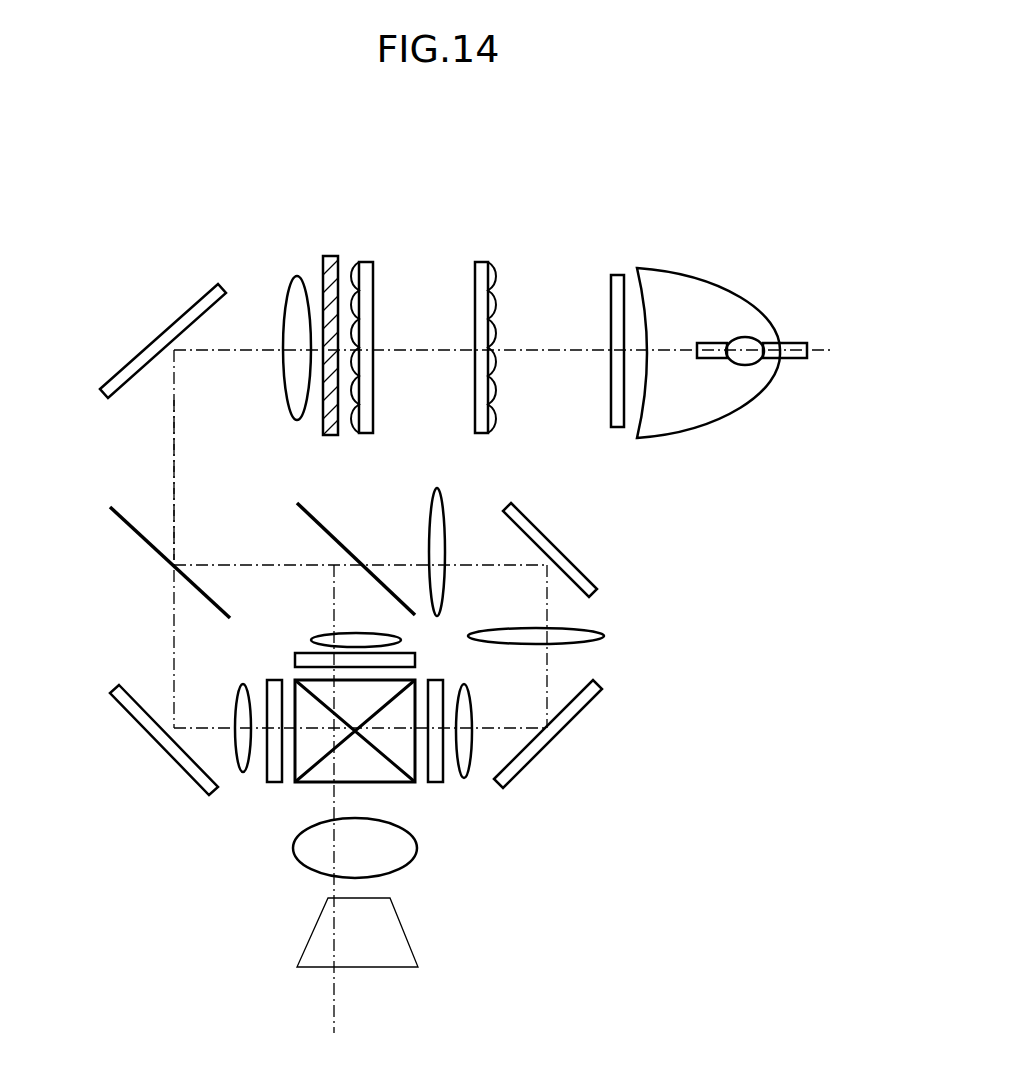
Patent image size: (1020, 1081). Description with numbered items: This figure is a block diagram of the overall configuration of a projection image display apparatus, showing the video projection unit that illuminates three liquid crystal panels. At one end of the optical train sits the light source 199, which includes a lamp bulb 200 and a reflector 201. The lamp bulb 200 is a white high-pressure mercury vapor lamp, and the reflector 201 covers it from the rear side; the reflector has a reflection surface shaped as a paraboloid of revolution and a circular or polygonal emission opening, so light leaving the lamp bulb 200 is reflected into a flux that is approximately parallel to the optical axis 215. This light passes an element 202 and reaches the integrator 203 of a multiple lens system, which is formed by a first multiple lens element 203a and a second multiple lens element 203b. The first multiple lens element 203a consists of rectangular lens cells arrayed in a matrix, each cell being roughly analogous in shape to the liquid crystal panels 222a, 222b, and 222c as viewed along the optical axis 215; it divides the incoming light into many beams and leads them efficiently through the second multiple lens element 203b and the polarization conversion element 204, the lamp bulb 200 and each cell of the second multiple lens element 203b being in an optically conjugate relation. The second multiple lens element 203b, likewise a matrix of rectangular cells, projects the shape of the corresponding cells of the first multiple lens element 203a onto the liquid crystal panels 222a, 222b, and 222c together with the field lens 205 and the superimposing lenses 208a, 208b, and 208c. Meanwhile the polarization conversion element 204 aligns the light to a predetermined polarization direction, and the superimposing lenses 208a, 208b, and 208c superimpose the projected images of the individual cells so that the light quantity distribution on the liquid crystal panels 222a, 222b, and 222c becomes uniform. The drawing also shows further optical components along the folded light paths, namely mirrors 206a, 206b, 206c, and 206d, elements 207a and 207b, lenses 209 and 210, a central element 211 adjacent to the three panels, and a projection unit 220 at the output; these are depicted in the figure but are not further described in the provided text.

The light source 199 is at (810, 212).
The lamp bulb 200 is at (752, 294).
The reflector 201 is at (708, 330).
The parallelizing lens / plate 202 is at (596, 296).
The integrator 203 is at (410, 156).
The first multiple lens element 203a is at (502, 299).
The second multiple lens element 203b is at (401, 299).
The polarization conversion element 204 is at (287, 302).
The field lens 205 is at (243, 315).
The reflecting mirror 206a is at (131, 336).
The reflecting mirror 206b is at (153, 763).
The reflecting mirror 206c is at (601, 550).
The reflecting mirror 206d is at (591, 749).
The dichroic mirror 207a is at (136, 562).
The dichroic mirror 207b is at (307, 559).
The superimposing lens 208a is at (330, 615).
The superimposing lens 208b is at (174, 701).
The superimposing lens 208c is at (509, 768).
The relay lens 209 is at (392, 542).
The relay lens 210 is at (597, 659).
The cross dichroic prism 211 is at (310, 786).
The optical axis 215 is at (114, 480).
The projection lens 220 is at (432, 850).
The liquid crystal panel 222a is at (315, 644).
The liquid crystal panel 222b is at (230, 761).
The liquid crystal panel 222c is at (468, 778).